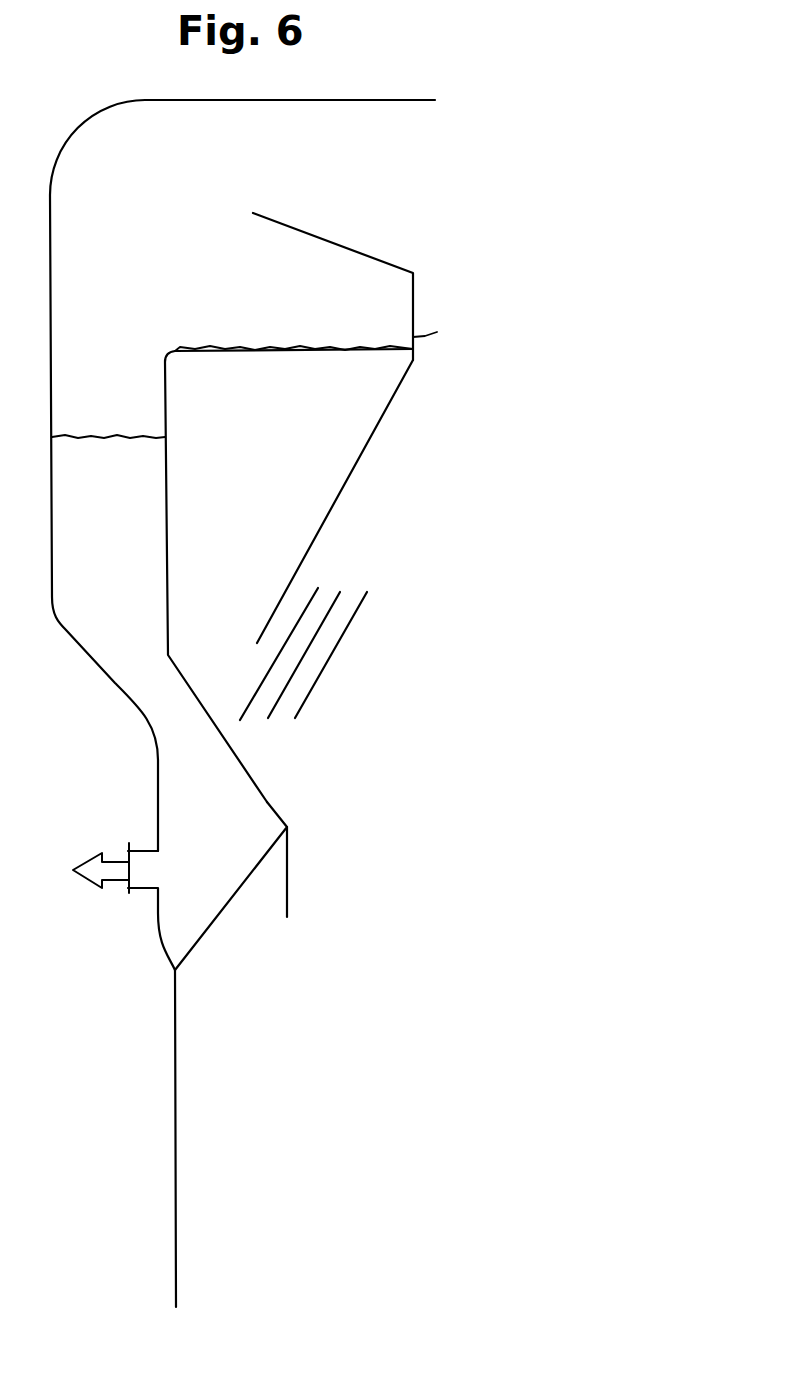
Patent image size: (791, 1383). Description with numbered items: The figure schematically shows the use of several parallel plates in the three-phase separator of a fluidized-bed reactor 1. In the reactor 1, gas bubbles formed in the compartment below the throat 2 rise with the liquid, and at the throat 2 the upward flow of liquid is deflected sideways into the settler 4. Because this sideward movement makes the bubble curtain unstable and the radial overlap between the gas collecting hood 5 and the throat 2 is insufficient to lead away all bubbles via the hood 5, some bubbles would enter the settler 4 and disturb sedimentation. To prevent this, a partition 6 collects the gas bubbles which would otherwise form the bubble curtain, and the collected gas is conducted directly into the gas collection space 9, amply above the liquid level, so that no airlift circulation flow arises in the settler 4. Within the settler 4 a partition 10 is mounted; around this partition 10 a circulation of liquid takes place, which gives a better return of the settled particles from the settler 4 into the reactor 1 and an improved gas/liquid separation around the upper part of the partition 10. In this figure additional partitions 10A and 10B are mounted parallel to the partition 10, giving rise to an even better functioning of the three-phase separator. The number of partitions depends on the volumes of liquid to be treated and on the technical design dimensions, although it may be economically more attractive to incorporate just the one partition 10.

The fluidized-bed reactor 1 is at (174, 1140).
The throat 2 is at (265, 803).
The settler 4 is at (301, 507).
The gas collecting hood 5 is at (367, 450).
The partition 6 is at (288, 883).
The gas collection space 9 is at (242, 475).
The partition 10 is at (317, 590).
The partition 10A is at (272, 712).
The partition 10B is at (335, 648).